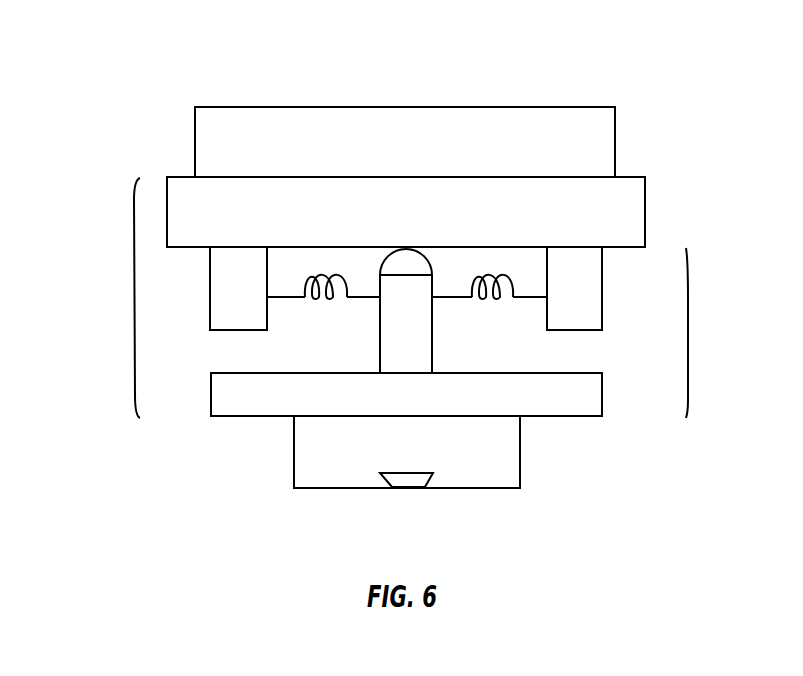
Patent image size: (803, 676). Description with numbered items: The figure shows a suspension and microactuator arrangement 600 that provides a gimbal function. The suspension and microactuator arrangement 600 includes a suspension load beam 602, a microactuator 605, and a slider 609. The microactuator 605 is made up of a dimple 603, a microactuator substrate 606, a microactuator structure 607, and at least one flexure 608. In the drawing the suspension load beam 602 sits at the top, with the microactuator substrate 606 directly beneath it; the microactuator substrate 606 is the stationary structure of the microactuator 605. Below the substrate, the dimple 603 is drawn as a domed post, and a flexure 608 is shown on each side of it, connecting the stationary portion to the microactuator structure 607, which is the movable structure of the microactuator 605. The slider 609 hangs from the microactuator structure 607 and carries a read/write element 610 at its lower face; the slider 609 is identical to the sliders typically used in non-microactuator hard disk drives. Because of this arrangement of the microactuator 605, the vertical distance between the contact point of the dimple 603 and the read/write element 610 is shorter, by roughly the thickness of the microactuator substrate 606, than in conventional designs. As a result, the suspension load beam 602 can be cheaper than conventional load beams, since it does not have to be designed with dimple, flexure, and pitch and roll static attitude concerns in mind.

The suspension and microactuator arrangement 600 is at (133, 90).
The suspension load beam 602 is at (602, 143).
The dimple 603 is at (406, 258).
The microactuator 605 is at (135, 297).
The microactuator substrate 606 is at (630, 217).
The microactuator structure 607 is at (688, 334).
The flexure 608 is at (325, 300).
The slider 609 is at (303, 448).
The read/write element 610 is at (405, 487).